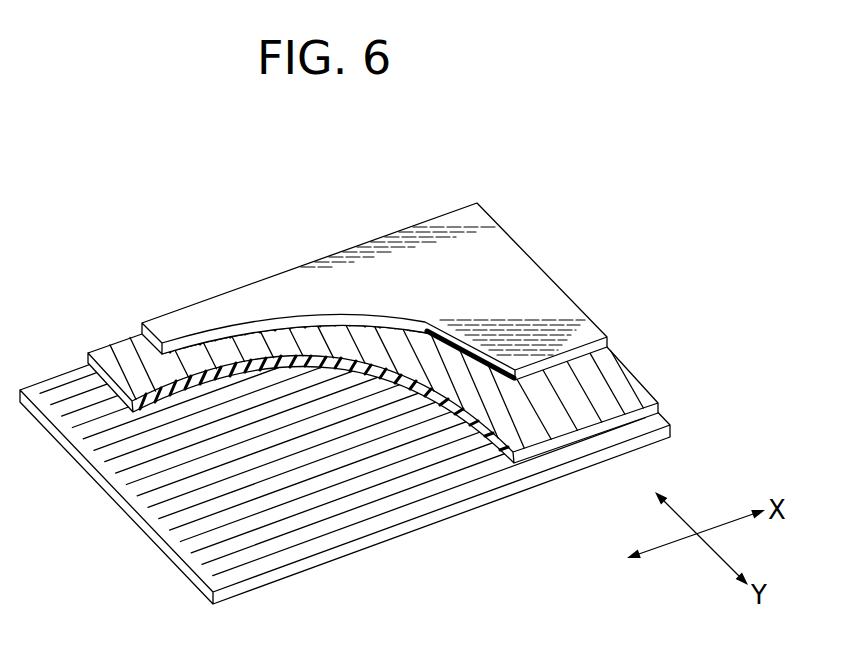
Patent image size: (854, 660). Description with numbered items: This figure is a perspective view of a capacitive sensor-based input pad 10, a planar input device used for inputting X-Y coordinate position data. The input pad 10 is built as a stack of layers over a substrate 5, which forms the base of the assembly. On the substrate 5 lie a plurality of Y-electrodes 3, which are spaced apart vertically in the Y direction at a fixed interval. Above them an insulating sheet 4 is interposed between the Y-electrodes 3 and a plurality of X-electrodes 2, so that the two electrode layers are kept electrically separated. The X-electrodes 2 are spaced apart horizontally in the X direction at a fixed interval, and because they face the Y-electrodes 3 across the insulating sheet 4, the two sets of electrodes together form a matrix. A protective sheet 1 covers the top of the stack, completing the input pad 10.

The input pad 10 is at (345, 395).
The protective sheet 1 is at (507, 262).
The X-electrodes 2 is at (588, 380).
The Y-electrodes 3 is at (332, 503).
The insulating sheet 4 is at (540, 450).
The substrate 5 is at (420, 521).